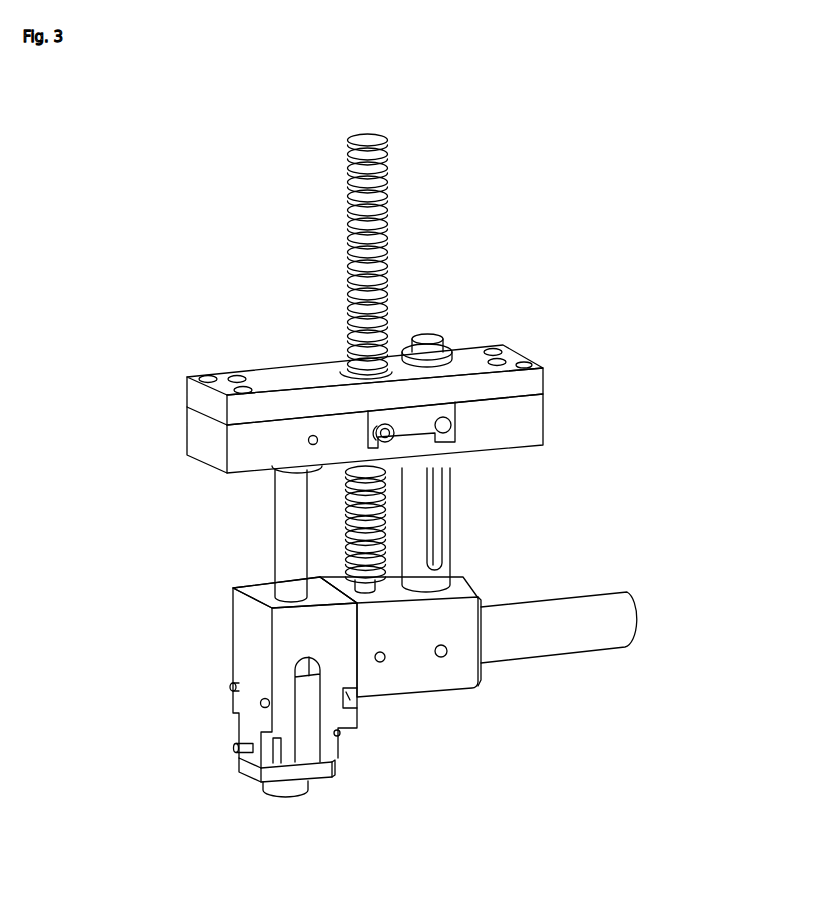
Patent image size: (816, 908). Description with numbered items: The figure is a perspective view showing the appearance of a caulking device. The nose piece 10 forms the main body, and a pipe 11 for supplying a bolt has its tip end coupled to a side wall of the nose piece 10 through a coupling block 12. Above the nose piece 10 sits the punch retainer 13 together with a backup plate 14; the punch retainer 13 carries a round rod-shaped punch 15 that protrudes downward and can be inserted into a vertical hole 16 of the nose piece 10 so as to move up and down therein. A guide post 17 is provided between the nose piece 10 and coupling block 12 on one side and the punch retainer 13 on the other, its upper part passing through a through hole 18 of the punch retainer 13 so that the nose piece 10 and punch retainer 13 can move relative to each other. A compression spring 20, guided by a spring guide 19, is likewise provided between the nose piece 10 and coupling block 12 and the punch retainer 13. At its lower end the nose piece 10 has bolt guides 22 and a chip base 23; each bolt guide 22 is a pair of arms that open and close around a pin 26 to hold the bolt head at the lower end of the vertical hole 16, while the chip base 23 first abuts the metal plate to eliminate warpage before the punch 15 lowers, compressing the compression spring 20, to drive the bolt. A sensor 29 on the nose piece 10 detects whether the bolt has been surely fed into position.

The nose piece 10 is at (242, 628).
The pipe 11 is at (572, 647).
The coupling block 12 is at (453, 672).
The punch retainer 13 is at (536, 418).
The backup plate 14 is at (537, 377).
The punch 15 is at (278, 500).
The vertical hole 16 is at (262, 590).
The guide post 17 is at (450, 502).
The through hole 18 is at (456, 362).
The spring guide 19 is at (360, 538).
The compression spring 20 is at (388, 175).
The bolt guide 22 is at (333, 762).
The chip base 23 is at (290, 790).
The pin 26 is at (229, 688).
The sensor 29 is at (236, 749).